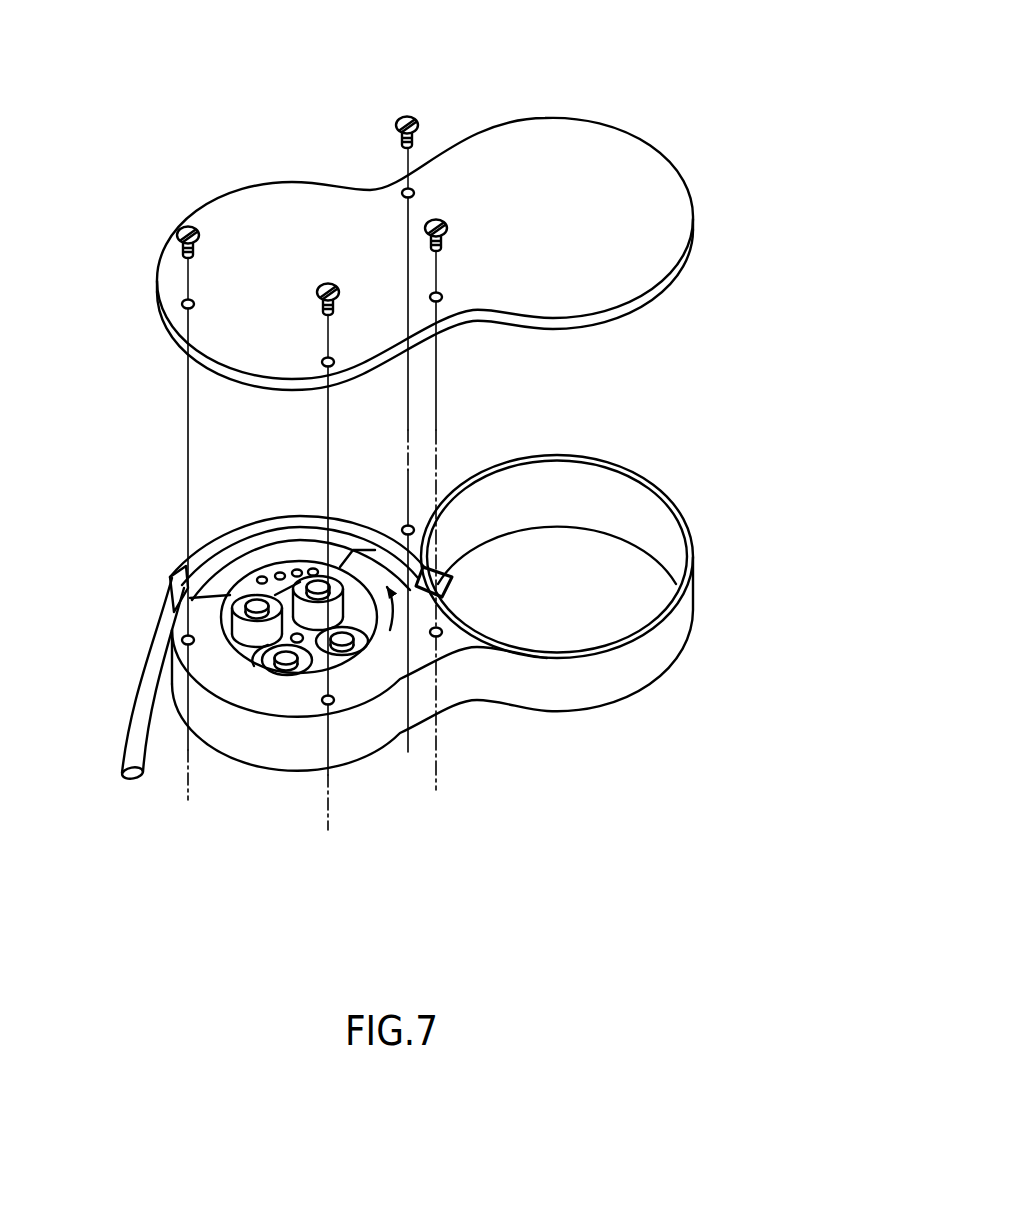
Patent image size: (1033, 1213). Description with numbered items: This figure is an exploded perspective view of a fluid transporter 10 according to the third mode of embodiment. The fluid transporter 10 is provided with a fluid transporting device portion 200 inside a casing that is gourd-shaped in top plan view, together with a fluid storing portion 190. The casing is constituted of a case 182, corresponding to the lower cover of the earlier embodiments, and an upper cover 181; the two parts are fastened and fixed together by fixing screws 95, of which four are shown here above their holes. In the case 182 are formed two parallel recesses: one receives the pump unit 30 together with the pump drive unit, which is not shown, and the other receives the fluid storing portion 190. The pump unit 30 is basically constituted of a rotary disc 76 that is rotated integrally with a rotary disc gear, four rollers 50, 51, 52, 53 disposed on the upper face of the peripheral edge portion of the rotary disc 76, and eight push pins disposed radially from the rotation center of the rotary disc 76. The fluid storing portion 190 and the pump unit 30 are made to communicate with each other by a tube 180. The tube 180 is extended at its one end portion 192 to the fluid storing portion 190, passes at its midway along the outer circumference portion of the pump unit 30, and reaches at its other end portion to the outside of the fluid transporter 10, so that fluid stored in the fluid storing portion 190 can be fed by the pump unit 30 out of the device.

The fluid transporter 10 is at (674, 78).
The pump unit 30 is at (365, 613).
The roller 50 is at (306, 579).
The roller 51 is at (243, 610).
The roller 52 is at (302, 667).
The roller 53 is at (361, 646).
The rotary disc 76 is at (253, 660).
The fixing screws 95 is at (406, 116).
The tube 180 is at (123, 740).
The upper cover 181 is at (250, 178).
The case 182 is at (590, 711).
The fluid storing portion 190 is at (601, 564).
The one end portion 192 is at (453, 579).
The fluid transporting device portion 200 is at (381, 471).